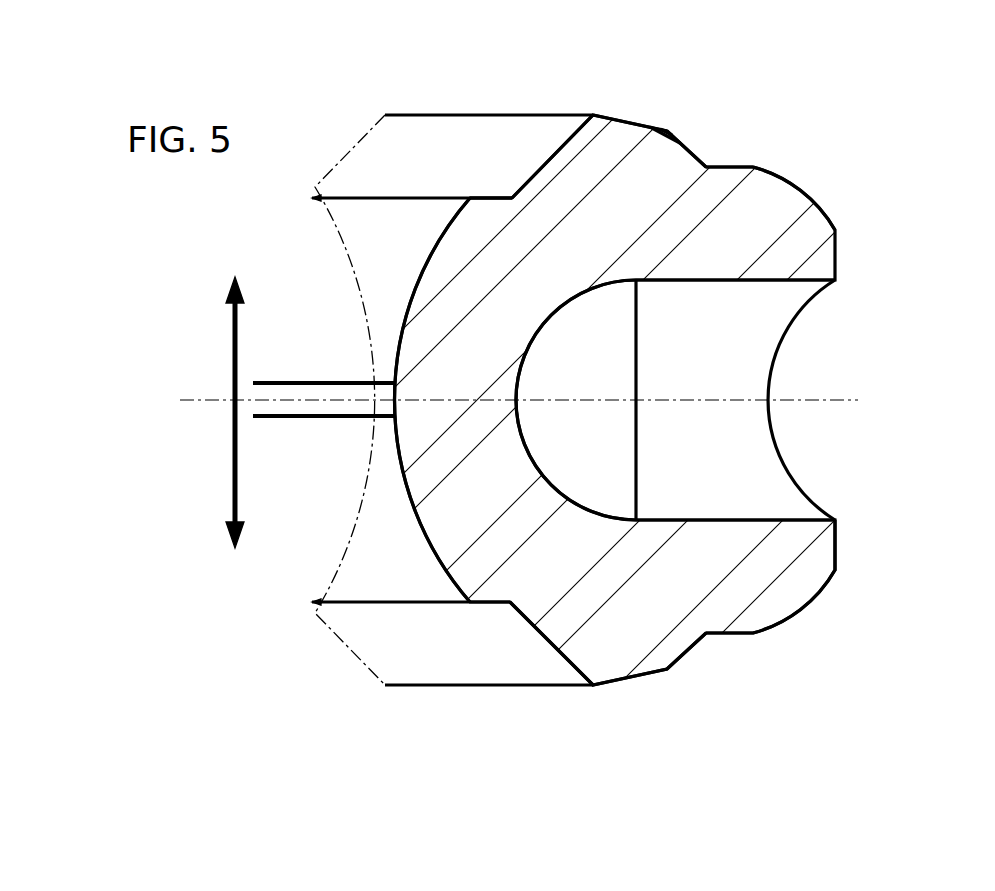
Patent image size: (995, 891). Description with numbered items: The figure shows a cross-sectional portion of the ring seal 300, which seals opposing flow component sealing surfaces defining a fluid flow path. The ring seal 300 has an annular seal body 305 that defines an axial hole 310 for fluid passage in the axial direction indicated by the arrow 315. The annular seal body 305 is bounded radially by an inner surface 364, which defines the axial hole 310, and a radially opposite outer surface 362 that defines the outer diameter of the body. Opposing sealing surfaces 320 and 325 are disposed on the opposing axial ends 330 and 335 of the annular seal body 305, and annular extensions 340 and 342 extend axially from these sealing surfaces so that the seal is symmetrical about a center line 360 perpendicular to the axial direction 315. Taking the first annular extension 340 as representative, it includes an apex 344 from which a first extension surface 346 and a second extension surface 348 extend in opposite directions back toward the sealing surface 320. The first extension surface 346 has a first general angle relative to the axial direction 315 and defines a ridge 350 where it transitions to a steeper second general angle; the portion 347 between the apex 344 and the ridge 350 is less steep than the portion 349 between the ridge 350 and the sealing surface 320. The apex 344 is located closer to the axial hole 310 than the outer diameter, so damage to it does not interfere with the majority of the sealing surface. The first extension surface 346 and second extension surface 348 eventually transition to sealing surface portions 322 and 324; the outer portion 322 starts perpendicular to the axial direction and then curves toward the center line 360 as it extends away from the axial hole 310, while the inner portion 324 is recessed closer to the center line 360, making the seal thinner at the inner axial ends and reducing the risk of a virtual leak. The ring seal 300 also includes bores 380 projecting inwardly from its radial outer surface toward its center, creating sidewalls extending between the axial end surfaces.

The ring seal 300 is at (312, 108).
The annular seal body 305 is at (317, 222).
The axial hole 310 is at (290, 606).
The axial direction 315 is at (232, 492).
The sealing surface 320 is at (793, 103).
The sealing surface portion 322 is at (768, 165).
The sealing surface portion 324 is at (480, 197).
The sealing surface 325 is at (762, 663).
The axial end 330 is at (477, 90).
The axial end 335 is at (540, 712).
The annular extension 340 is at (618, 143).
The annular extension 342 is at (618, 653).
The apex 344 is at (592, 113).
The first extension surface 346 is at (670, 104).
The portion of the first extension surface 347 is at (622, 118).
The second extension surface 348 is at (560, 145).
The portion of the first extension surface 349 is at (686, 148).
The ridge 350 is at (668, 130).
The center line 360 is at (203, 398).
The outer surface 362 is at (831, 262).
The inner surface 364 is at (395, 363).
The bores 380 is at (705, 450).